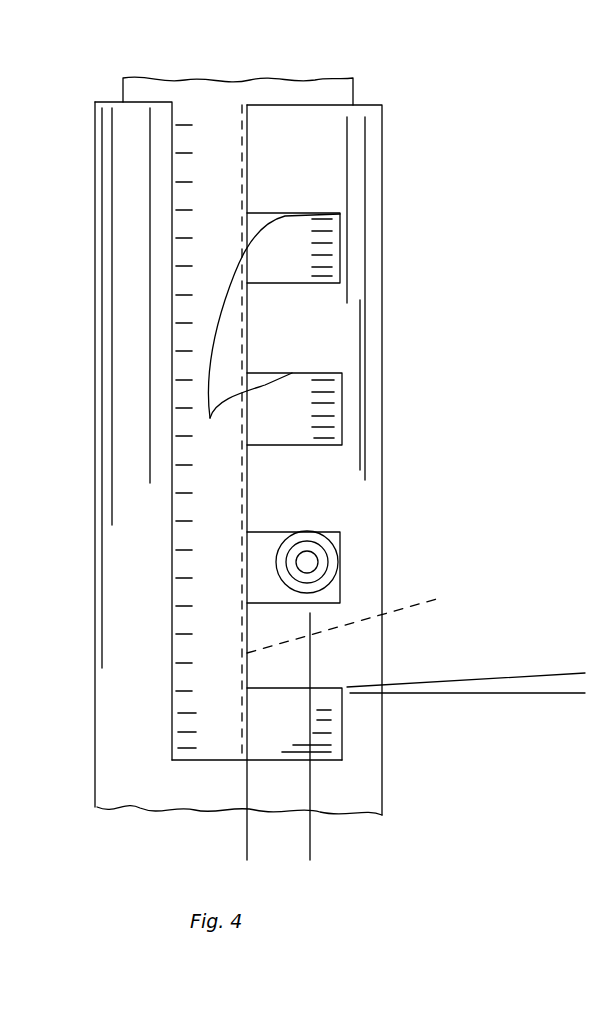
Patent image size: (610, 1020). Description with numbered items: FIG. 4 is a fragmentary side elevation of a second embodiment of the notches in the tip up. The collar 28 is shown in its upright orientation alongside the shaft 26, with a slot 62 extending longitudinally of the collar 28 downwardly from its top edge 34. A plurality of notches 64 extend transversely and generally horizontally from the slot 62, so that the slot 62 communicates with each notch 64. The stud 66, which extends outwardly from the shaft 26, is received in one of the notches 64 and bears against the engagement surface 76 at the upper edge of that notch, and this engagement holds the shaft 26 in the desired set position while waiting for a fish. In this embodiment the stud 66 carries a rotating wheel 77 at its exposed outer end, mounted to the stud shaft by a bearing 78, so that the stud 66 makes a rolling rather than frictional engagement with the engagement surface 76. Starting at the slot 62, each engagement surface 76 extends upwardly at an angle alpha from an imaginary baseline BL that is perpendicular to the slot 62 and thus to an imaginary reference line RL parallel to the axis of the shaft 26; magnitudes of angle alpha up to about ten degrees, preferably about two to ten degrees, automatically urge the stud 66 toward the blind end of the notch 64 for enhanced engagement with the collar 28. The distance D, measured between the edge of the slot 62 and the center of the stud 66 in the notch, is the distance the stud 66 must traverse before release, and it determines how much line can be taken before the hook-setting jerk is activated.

The shaft 26 is at (213, 102).
The top edge of the collar 34 is at (297, 105).
The notches 64 is at (297, 402).
The engagement surface 76 is at (182, 436).
The collar 28 is at (345, 492).
The slot 62 is at (172, 495).
The rotating wheel 77 is at (330, 592).
The bearing 78 is at (323, 555).
The stud 66 is at (270, 569).
The imaginary reference line RL is at (462, 602).
The imaginary baseline BL is at (475, 695).
The angle α alpha is at (555, 735).
The distance D is at (345, 845).